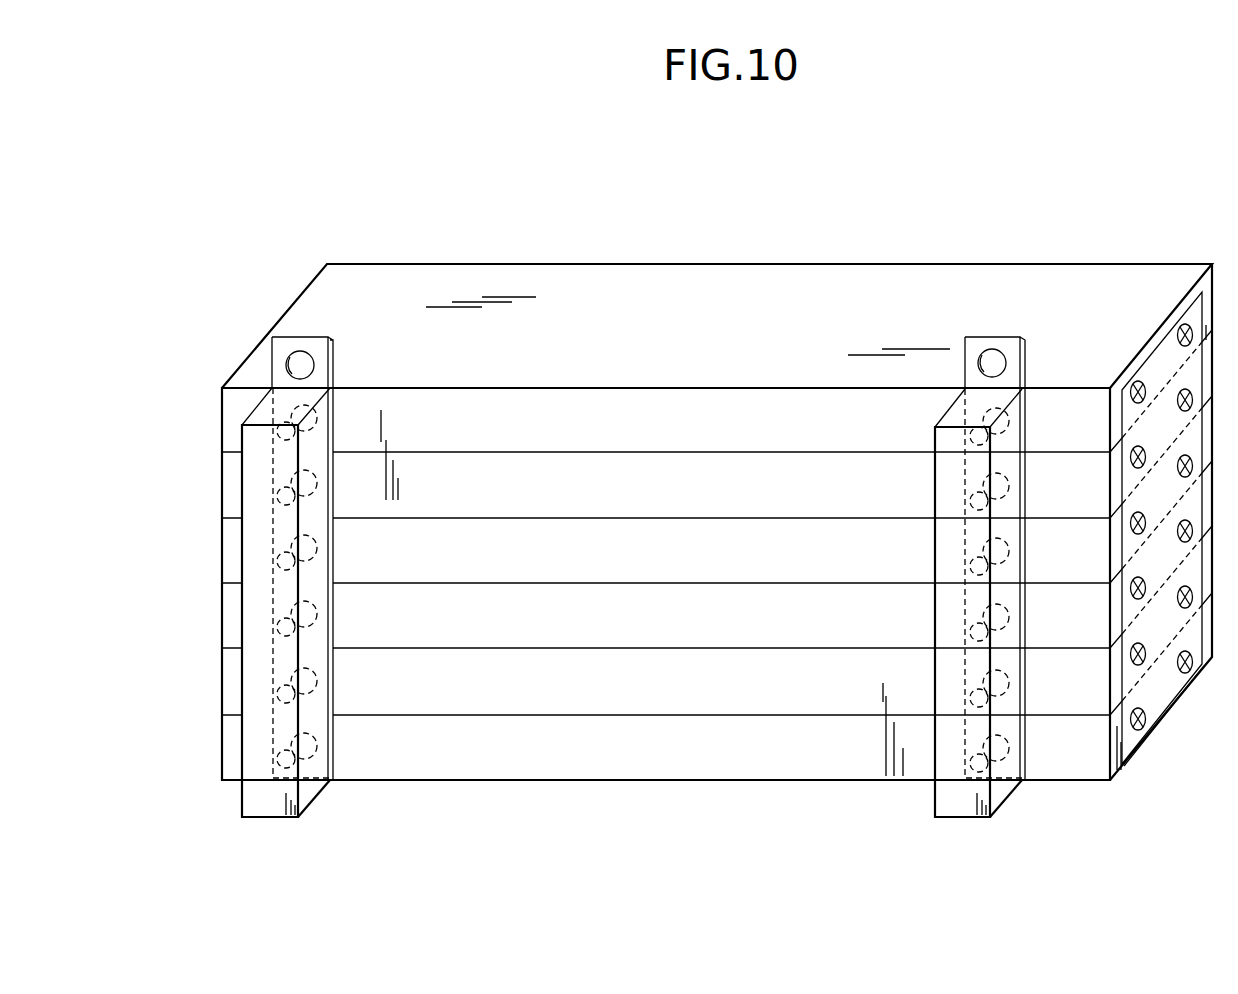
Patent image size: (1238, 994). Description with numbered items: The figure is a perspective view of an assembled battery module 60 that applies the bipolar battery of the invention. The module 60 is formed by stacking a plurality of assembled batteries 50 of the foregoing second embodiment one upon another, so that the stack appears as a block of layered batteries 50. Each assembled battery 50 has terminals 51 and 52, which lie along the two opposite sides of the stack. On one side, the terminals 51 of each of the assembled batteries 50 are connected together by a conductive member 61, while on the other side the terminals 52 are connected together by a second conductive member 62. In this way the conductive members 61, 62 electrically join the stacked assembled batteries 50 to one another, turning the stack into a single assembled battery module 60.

The assembled battery 50 is at (693, 728).
The terminal 51 is at (277, 759).
The terminal 52 is at (1008, 750).
The assembled battery module 60 is at (294, 212).
The conductive member 61 is at (268, 806).
The conductive member 62 is at (958, 806).